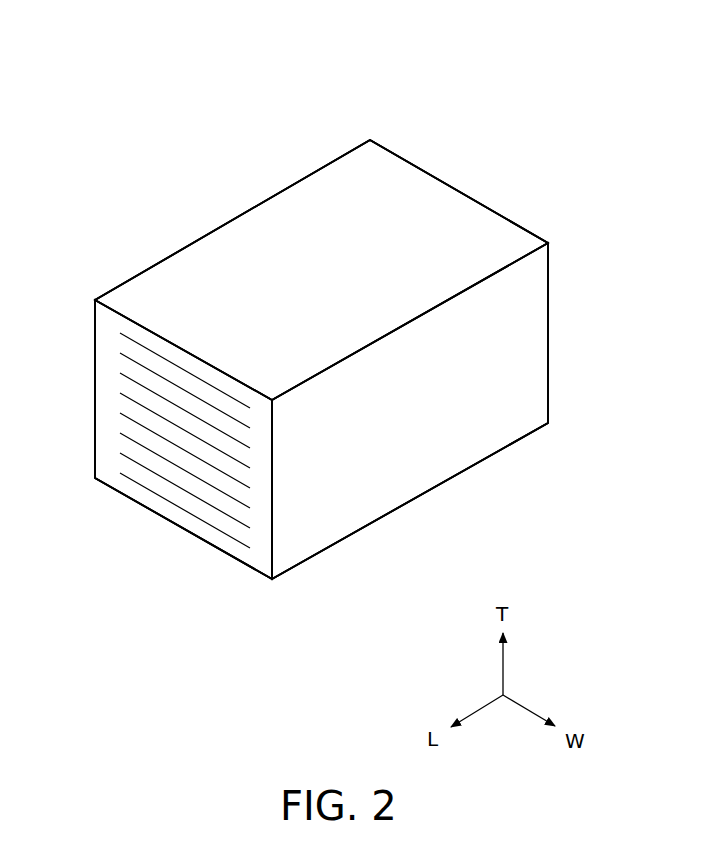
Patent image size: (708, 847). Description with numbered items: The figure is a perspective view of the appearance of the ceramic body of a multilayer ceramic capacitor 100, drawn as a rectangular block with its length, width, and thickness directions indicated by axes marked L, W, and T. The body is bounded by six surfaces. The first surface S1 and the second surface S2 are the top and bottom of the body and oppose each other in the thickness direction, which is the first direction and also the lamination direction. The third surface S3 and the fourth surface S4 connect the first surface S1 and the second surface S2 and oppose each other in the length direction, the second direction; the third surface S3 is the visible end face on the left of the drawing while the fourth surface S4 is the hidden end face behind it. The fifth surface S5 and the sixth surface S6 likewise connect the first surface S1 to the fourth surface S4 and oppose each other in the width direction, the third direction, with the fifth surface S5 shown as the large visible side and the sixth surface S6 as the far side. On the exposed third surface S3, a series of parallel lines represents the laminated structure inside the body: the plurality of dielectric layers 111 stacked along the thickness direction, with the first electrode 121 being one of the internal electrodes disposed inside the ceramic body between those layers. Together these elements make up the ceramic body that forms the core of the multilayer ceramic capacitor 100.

The multilayer ceramic capacitor 100 is at (121, 39).
The first surface S1 is at (321, 203).
The second surface S2 is at (331, 525).
The third surface S3 is at (180, 503).
The fourth surface S4 is at (439, 216).
The fifth surface S5 is at (521, 347).
The sixth surface S6 is at (167, 290).
The dielectric layers 111 is at (120, 393).
The first electrode 121 is at (120, 333).